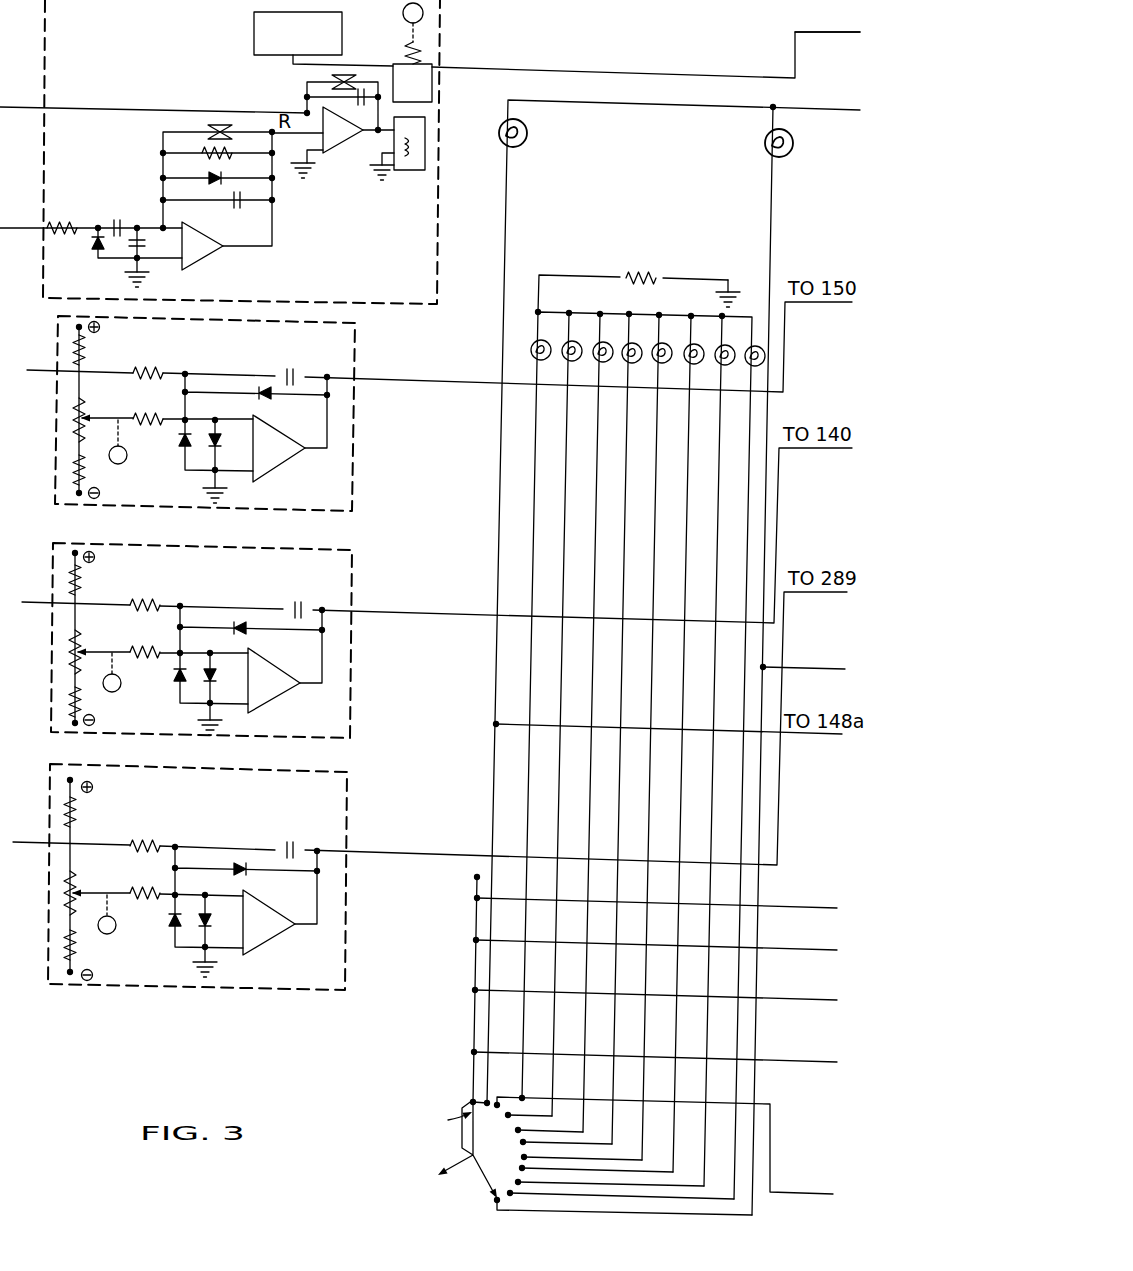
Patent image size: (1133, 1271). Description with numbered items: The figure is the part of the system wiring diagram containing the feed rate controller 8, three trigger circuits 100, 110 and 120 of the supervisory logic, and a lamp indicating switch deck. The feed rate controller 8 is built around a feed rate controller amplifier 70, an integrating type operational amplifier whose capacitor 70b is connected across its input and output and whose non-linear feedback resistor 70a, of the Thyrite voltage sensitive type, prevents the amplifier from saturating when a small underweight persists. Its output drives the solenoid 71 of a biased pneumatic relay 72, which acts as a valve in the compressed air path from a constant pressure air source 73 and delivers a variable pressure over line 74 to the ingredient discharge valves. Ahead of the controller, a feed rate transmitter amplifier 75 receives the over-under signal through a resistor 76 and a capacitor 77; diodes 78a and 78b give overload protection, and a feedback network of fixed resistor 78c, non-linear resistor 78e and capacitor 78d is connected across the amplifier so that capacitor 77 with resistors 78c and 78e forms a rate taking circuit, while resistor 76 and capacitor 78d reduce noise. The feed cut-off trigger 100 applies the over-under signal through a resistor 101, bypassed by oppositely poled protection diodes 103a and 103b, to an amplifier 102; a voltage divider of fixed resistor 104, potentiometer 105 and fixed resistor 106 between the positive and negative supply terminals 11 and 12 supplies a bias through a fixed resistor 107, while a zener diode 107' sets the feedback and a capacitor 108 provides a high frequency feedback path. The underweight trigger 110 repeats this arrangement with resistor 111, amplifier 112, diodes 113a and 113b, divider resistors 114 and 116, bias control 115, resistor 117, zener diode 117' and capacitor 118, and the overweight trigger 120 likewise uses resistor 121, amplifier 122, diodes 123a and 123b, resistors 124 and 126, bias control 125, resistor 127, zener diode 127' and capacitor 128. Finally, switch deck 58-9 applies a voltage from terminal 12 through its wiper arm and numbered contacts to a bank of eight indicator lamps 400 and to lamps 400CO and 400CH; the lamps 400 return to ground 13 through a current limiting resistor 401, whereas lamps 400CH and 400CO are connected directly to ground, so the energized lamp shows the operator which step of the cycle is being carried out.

The feed rate controller 8 is at (437, 278).
The positive terminal 11 is at (77, 327).
The negative terminal 12 is at (77, 496).
The ground 13 is at (729, 286).
The feed rate controller amplifier 70 is at (336, 150).
The non-linear feedback resistor 70a is at (334, 82).
The capacitor 70b is at (355, 101).
The solenoid 71 is at (408, 170).
The biased pneumatic relay 72 is at (404, 52).
The constant pressure air source 73 is at (342, 27).
The line 74 is at (831, 32).
The feed rate transmitter amplifier 75 is at (207, 252).
The resistor 76 is at (66, 224).
The capacitor 77 is at (116, 222).
The diode 78a is at (94, 247).
The diode 78b is at (140, 240).
The fixed resistor 78c is at (205, 150).
The capacitor 78d is at (245, 201).
The non-linear resistor 78e is at (216, 126).
The feed cut-off trigger 100 is at (283, 512).
The resistor 101 is at (149, 371).
The amplifier 102 is at (284, 466).
The protection diode 103a is at (182, 441).
The protection diode 103b is at (217, 433).
The fixed resistor 104 is at (84, 350).
The potentiometer 105 is at (90, 417).
The fixed resistor 106 is at (80, 462).
The fixed resistor 107 is at (154, 404).
The zener diode 107' is at (288, 406).
The capacitor 108 is at (293, 371).
The underweight trigger 110 is at (312, 738).
The resistor 111 is at (144, 602).
The amplifier 112 is at (272, 701).
The protection diode 113a is at (176, 678).
The protection diode 113b is at (211, 681).
The fixed resistor 114 is at (79, 584).
The bias control 115 is at (80, 650).
The fixed resistor 116 is at (79, 695).
The fixed resistor 117 is at (150, 642).
The zener diode 117' is at (262, 620).
The capacitor 118 is at (297, 603).
The overweight trigger 120 is at (112, 990).
The resistor 121 is at (144, 844).
The amplifier 122 is at (278, 948).
The protection diode 123a is at (172, 926).
The protection diode 123b is at (208, 927).
The fixed resistor 124 is at (75, 810).
The bias control 125 is at (77, 893).
The fixed resistor 126 is at (75, 940).
The fixed resistor 127 is at (148, 875).
The zener diode 127' is at (272, 879).
The capacitor 128 is at (290, 845).
The indicator lamps 400 is at (531, 350).
The indicator lamp 400CH is at (522, 147).
The indicator lamp 400CO is at (765, 143).
The resistor 401 is at (655, 258).
The switch deck 58-9 is at (458, 1153).